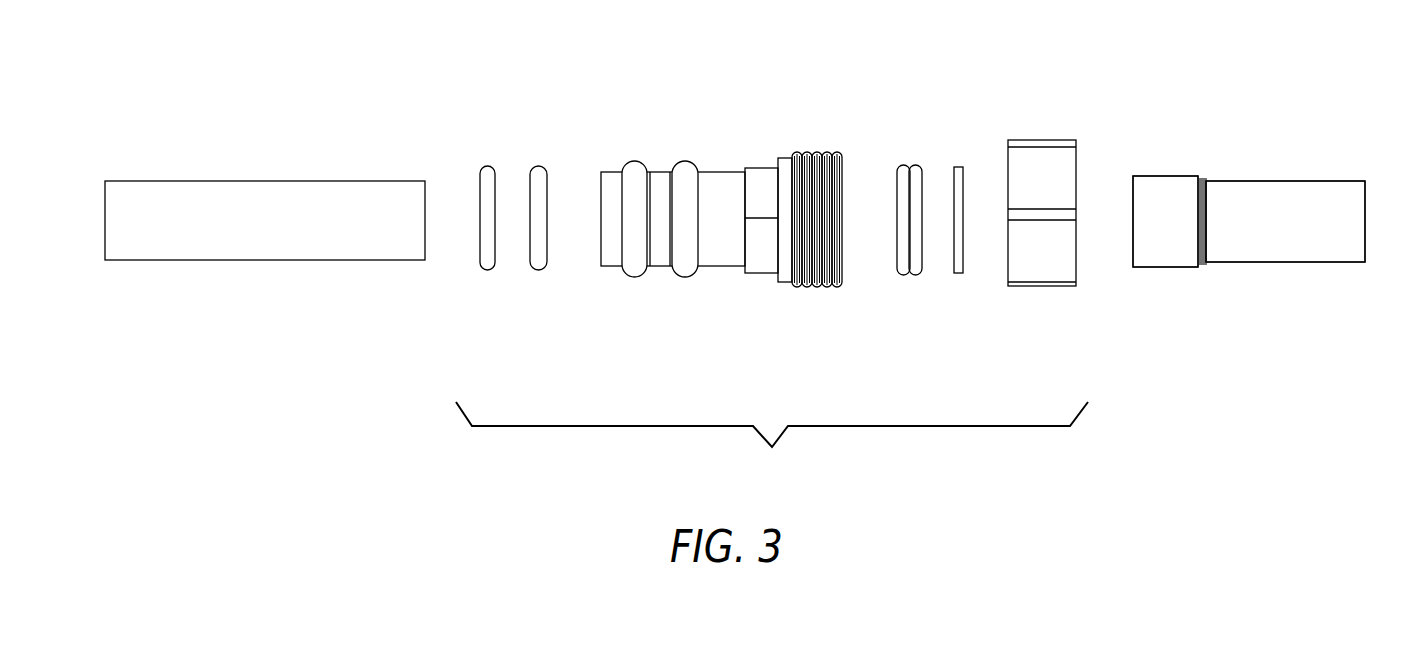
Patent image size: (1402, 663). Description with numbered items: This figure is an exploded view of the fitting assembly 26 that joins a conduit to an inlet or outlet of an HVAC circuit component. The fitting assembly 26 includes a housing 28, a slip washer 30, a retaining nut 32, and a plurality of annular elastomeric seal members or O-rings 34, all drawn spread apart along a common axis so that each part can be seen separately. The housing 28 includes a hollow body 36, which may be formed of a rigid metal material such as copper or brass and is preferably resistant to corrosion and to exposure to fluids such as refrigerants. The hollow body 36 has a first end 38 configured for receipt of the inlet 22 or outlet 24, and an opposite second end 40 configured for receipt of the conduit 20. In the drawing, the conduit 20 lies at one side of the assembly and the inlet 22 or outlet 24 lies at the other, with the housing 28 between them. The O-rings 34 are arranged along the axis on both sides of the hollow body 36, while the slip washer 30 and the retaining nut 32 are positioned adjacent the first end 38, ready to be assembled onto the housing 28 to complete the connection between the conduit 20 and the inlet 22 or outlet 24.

The conduit 20 is at (212, 261).
The inlet 22 is at (1273, 263).
The outlet 24 is at (1249, 221).
The fitting assembly 26 is at (772, 446).
The housing 28 is at (721, 206).
The slip washer 30 is at (958, 167).
The retaining nut 32 is at (1043, 265).
The O-rings 34 is at (487, 271).
The hollow body 36 is at (721, 206).
The first end 38 is at (815, 285).
The second end 40 is at (606, 268).